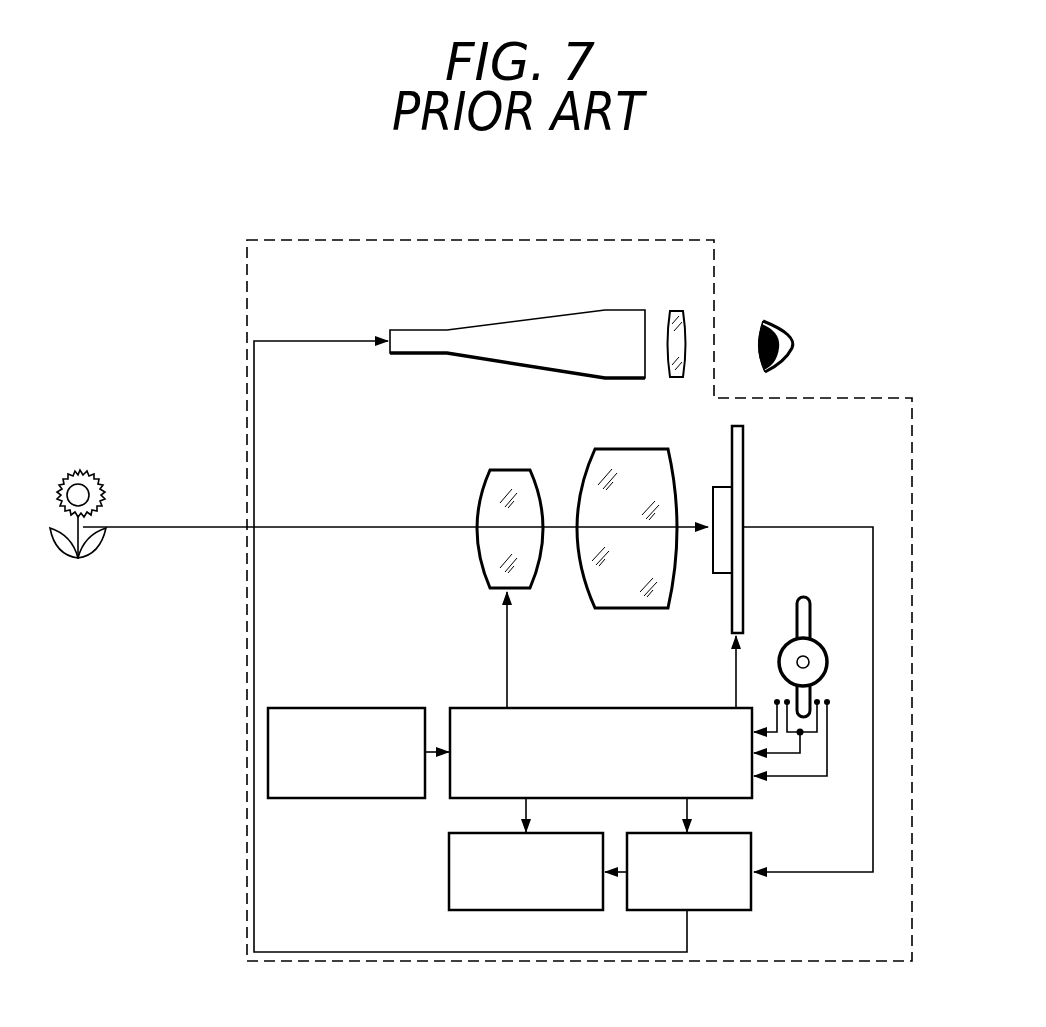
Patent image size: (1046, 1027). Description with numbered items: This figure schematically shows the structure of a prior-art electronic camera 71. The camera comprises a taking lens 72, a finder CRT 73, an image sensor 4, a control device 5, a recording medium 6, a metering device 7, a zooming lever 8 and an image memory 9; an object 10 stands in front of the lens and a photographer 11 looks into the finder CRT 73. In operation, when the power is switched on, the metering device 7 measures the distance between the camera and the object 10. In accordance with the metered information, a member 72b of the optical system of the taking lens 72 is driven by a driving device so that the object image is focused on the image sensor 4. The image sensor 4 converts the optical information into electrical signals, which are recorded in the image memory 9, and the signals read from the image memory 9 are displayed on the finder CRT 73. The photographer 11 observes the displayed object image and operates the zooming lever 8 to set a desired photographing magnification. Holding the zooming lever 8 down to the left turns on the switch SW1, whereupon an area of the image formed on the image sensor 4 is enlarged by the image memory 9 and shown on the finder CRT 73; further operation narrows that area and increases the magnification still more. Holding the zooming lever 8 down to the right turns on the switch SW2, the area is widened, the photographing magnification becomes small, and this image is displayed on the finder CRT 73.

The electronic camera 71 is at (375, 239).
The finder CRT 73 is at (557, 318).
The photographer 11 is at (790, 329).
The object 10 is at (96, 470).
The taking lens 72 is at (542, 505).
The member of the optical system of the taking lens 72b is at (482, 572).
The image sensor 4 is at (742, 450).
The zooming lever 8 is at (804, 596).
The switch SW1 is at (825, 700).
The switch SW2 is at (779, 700).
The control device 5 is at (480, 707).
The metering device 7 is at (300, 707).
The recording medium 6 is at (558, 911).
The image memory 9 is at (715, 911).